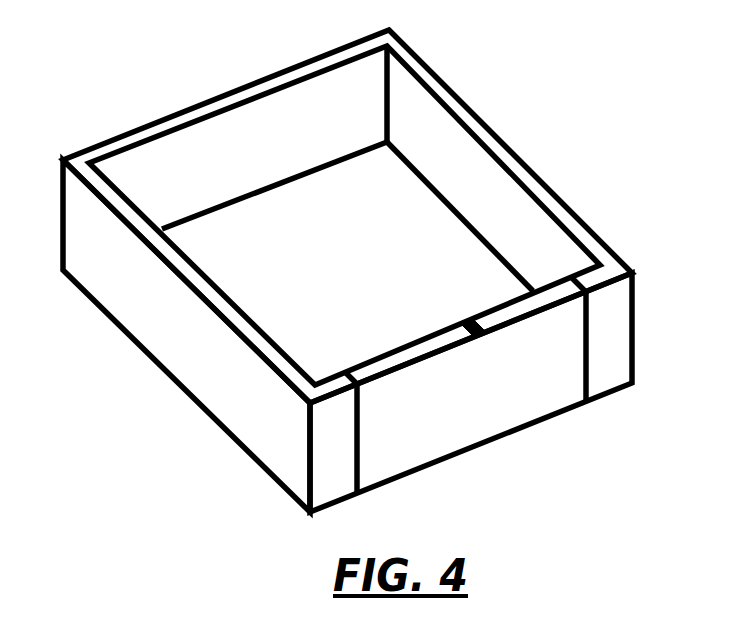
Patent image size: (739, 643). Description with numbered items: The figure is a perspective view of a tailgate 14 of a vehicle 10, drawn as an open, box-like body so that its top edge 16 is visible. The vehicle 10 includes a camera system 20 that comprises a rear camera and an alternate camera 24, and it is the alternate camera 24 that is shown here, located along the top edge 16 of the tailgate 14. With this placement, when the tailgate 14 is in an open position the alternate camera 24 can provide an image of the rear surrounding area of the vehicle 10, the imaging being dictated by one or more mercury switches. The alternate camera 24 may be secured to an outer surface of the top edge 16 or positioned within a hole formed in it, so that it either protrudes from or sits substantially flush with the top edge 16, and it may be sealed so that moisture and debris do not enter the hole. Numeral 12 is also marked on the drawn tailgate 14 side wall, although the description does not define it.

The vehicle 10 is at (347, 271).
The side wall 12 is at (207, 382).
The tailgate 14 is at (530, 365).
The top edge 16 is at (393, 360).
The camera system 20 is at (418, 296).
The alternate camera 24 is at (462, 322).